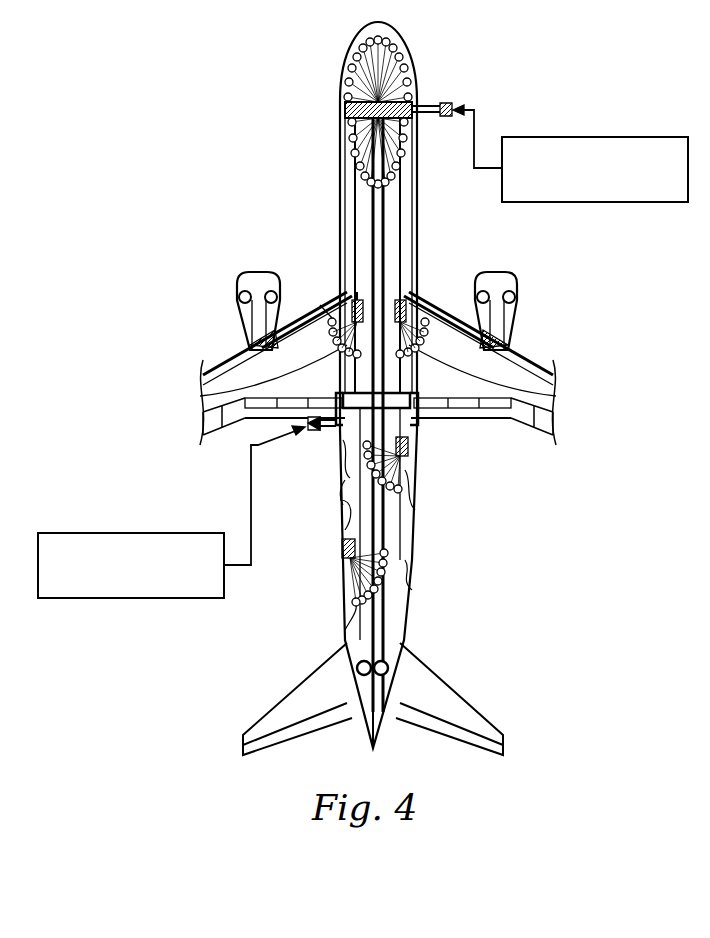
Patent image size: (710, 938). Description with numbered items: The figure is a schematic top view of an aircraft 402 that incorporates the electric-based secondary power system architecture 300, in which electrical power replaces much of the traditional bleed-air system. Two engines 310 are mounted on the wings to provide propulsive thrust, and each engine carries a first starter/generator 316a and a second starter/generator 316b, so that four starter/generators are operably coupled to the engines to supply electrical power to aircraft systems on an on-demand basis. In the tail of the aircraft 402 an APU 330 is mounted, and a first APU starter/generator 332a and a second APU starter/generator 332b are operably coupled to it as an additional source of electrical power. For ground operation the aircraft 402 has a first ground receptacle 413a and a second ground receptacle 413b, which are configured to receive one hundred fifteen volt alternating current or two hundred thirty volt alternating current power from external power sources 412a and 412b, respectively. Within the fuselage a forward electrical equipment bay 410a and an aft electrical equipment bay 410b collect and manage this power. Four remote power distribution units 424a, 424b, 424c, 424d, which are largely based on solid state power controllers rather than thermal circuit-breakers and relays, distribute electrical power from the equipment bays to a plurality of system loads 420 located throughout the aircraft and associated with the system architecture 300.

The electric-based secondary power system architecture 300 is at (518, 246).
The engines 310 is at (235, 325).
The first starter/generator 316a is at (238, 282).
The second starter/generator 316b is at (266, 278).
The APU 330 is at (395, 678).
The first APU starter/generator 332a is at (353, 658).
The second APU starter/generator 332b is at (394, 662).
The aircraft 402 is at (610, 78).
The forward electrical equipment bay 410a is at (396, 55).
The aft electrical equipment bay 410b is at (415, 410).
The external power source 412a is at (618, 137).
The external power source 412b is at (82, 534).
The first ground receptacle 413a is at (444, 100).
The second ground receptacle 413b is at (303, 432).
The system loads 420 is at (200, 400).
The remote power distribution unit 424a is at (340, 568).
The remote power distribution unit 424b is at (402, 470).
The remote power distribution unit 424c is at (340, 278).
The remote power distribution unit 424d is at (412, 235).